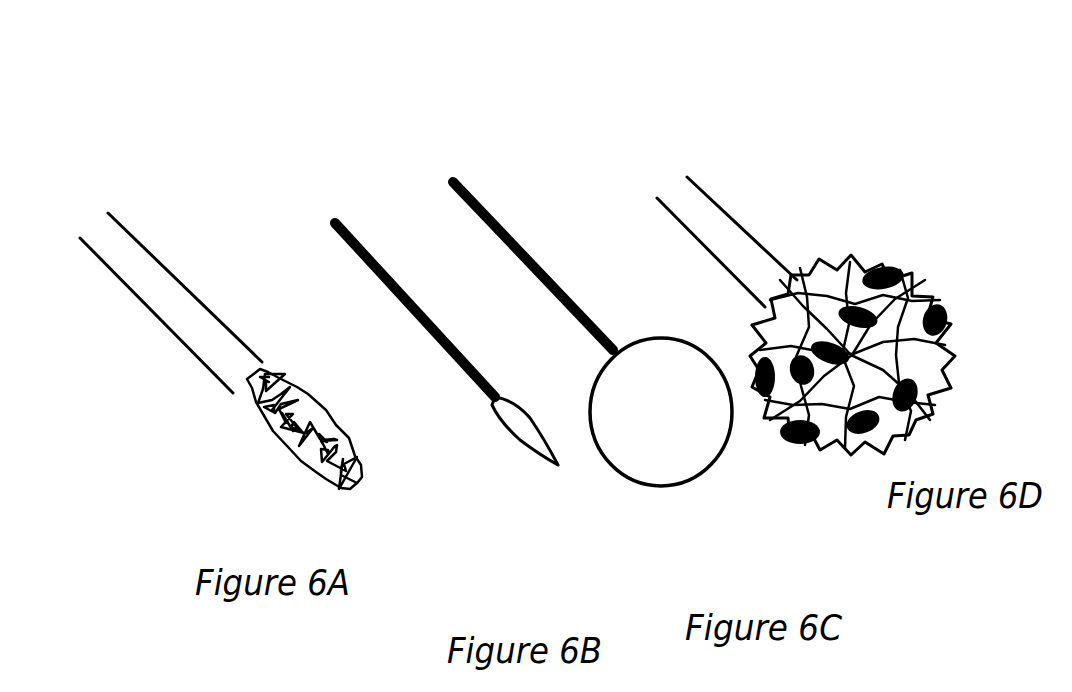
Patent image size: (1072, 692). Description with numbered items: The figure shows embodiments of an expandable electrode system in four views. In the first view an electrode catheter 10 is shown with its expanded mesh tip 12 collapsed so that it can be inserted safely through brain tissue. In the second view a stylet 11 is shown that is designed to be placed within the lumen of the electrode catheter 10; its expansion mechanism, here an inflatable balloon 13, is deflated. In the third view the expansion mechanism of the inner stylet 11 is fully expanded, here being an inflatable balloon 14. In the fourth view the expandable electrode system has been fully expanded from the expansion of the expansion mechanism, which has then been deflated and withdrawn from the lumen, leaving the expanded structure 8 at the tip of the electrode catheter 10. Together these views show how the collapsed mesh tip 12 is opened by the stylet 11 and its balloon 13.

In FIG. 6D, the cells / particulate aggregate 8 is at (942, 315).
In FIG. 6A, the electrode catheter 10 is at (150, 203).
In FIG. 6D, the electrode catheter 10 is at (745, 153).
In FIG. 6B, the stylet 11 is at (382, 188).
In FIG. 6C, the stylet 11 is at (513, 168).
In FIG. 6A, the expanded mesh tip 12 is at (285, 465).
In FIG. 6B, the inflatable balloon 13 is at (535, 458).
In FIG. 6C, the loop 14 is at (677, 458).